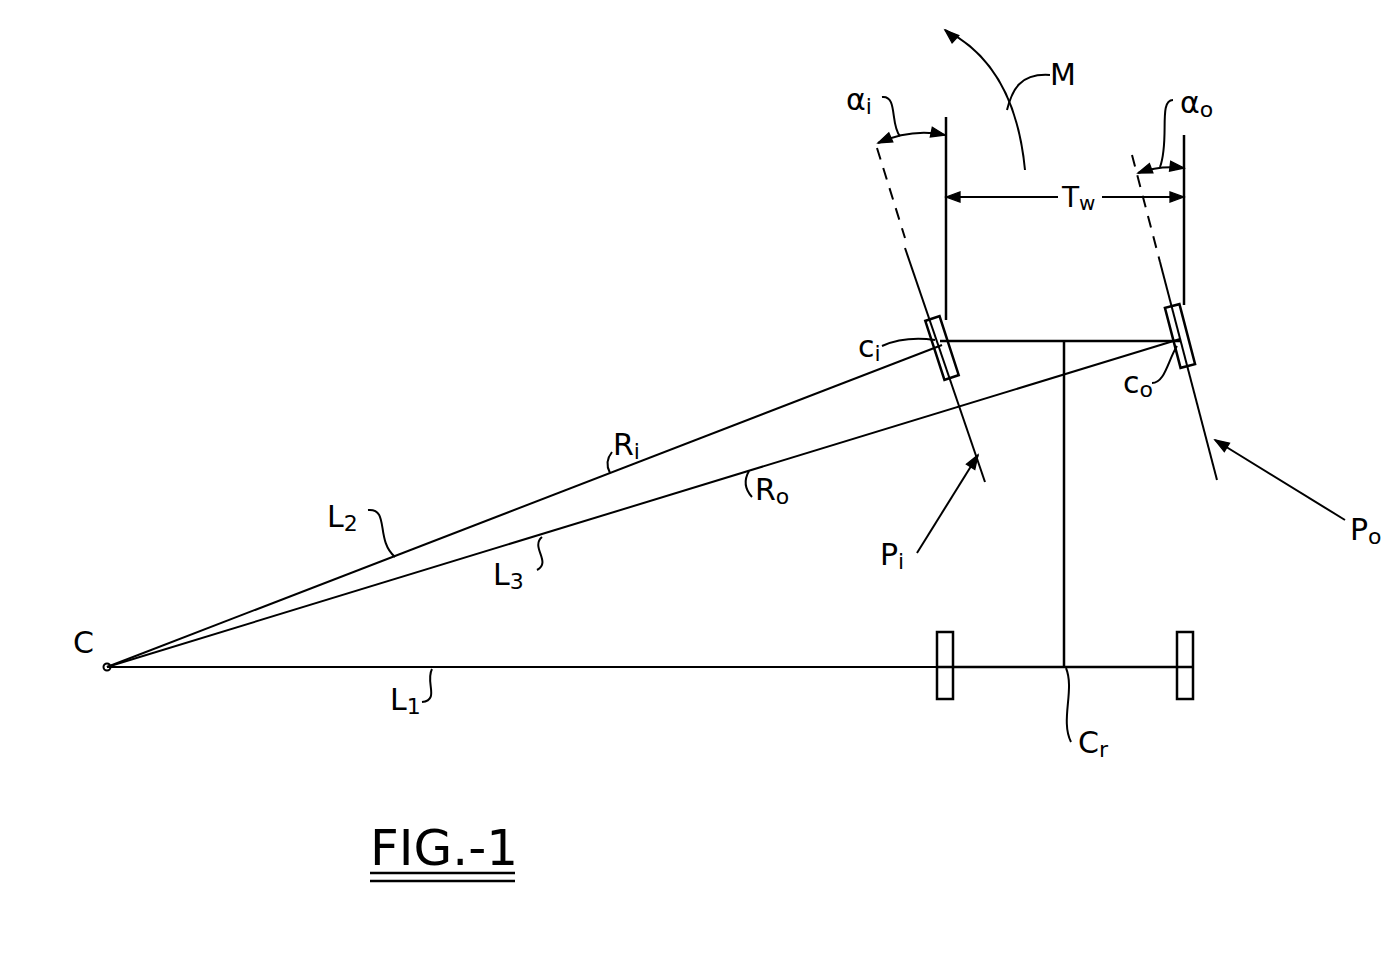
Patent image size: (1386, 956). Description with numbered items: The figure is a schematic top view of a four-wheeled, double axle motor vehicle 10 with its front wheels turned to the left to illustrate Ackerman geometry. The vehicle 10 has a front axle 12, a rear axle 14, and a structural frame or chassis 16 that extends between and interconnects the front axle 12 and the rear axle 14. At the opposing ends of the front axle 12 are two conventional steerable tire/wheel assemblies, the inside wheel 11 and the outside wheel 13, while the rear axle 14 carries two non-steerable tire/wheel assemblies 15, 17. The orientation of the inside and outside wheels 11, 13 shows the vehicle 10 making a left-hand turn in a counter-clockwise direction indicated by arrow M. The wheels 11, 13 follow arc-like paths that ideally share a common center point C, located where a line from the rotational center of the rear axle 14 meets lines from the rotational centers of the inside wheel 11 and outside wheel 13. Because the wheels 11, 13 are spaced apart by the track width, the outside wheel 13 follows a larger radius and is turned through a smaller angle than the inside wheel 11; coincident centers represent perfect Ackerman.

The vehicle 10 is at (1053, 690).
The inside wheel 11 is at (930, 325).
The front axle 12 is at (1048, 341).
The outside wheel 13 is at (1196, 322).
The rear axle 14 is at (1112, 668).
The tire/wheel assembly 15 is at (937, 688).
The structural frame or chassis 16 is at (1068, 535).
The tire/wheel assembly 17 is at (1193, 690).